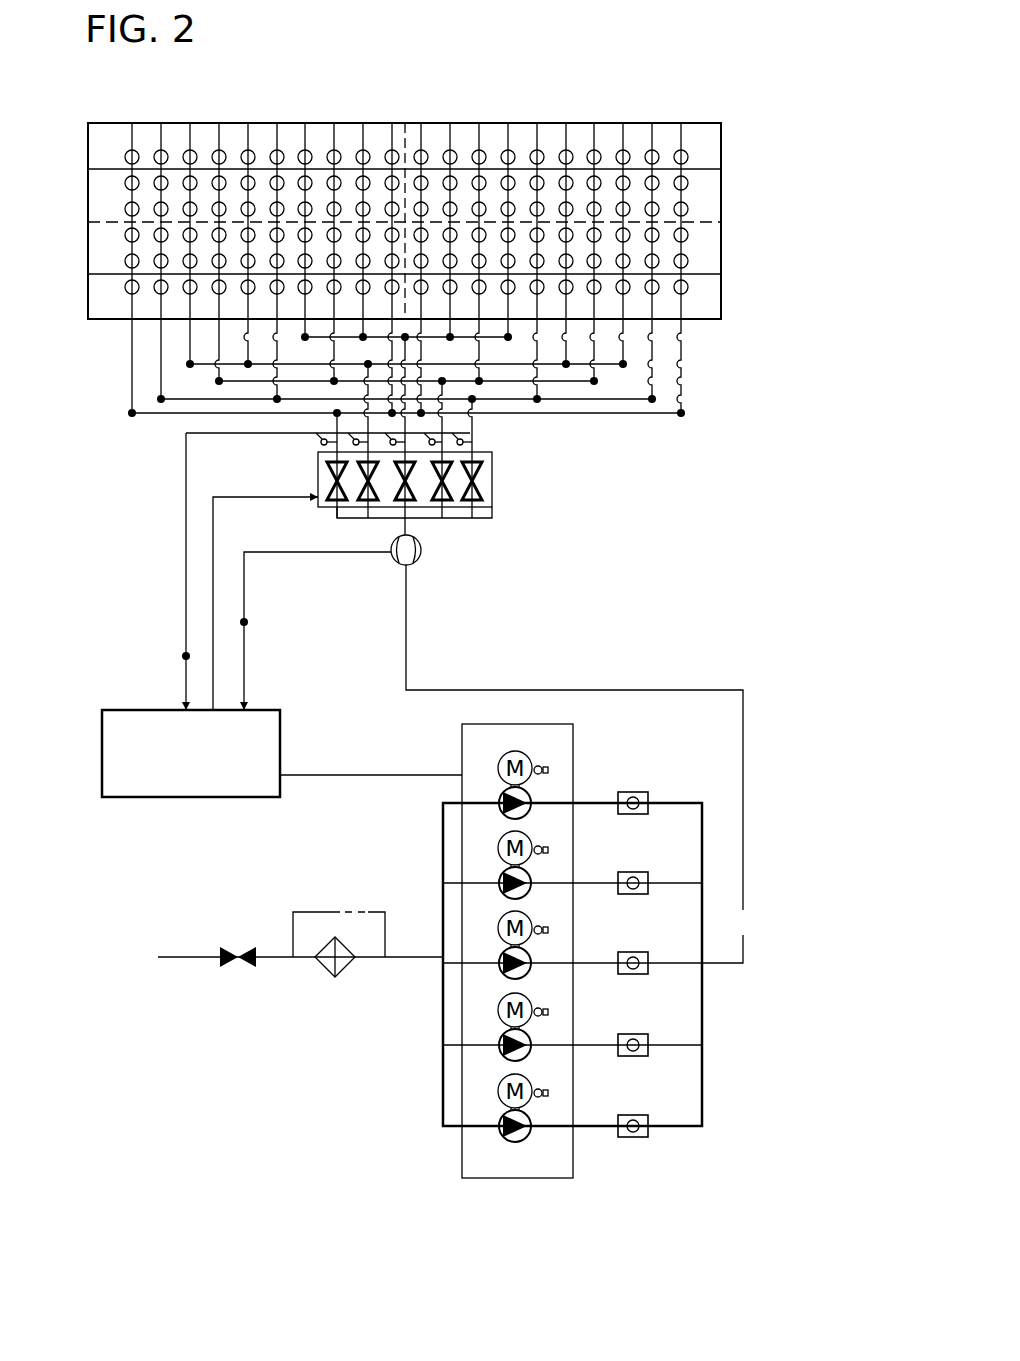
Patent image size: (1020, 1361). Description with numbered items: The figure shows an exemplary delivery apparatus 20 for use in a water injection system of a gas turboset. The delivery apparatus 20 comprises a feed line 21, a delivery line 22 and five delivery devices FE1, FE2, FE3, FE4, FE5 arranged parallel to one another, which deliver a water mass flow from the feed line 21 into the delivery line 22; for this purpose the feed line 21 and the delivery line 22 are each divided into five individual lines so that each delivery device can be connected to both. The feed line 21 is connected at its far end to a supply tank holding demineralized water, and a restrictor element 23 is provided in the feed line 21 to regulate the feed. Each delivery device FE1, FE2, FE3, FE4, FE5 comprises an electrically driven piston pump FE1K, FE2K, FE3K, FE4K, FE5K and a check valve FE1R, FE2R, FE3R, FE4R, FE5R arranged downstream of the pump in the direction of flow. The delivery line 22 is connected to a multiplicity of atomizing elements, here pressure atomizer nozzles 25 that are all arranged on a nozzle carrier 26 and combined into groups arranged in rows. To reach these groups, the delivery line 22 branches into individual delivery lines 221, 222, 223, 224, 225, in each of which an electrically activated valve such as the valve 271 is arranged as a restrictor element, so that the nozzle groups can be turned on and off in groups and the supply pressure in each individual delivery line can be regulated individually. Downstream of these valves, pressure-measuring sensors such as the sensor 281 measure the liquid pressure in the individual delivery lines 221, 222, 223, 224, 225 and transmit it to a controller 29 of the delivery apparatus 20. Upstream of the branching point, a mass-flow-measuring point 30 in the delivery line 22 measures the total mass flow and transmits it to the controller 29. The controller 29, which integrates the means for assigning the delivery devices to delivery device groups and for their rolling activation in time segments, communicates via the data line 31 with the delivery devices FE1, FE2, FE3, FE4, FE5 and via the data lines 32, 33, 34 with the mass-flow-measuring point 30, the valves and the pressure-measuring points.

The delivery apparatus 20 is at (210, 1190).
The feed line 21 is at (387, 962).
The delivery line 22 is at (743, 750).
The individual delivery line 221 is at (478, 507).
The individual delivery line 222 is at (445, 507).
The individual delivery line 223 is at (405, 507).
The individual delivery line 224 is at (362, 507).
The individual delivery line 225 is at (335, 507).
The restrictor element 23 is at (238, 968).
The pressure atomizer nozzles 25 is at (562, 143).
The nozzle carrier 26 is at (380, 123).
The electrically activated valve 271 is at (500, 491).
The pressure-measuring sensor 281 is at (500, 444).
The controller 29 is at (143, 797).
The mass-flow-measuring point 30 is at (406, 565).
The data line 31 is at (337, 775).
The data line 32 is at (244, 650).
The data line 33 is at (213, 507).
The data line 34 is at (186, 610).
The delivery device FE1 is at (502, 1148).
The delivery device FE2 is at (482, 1068).
The delivery device FE3 is at (476, 990).
The delivery device FE4 is at (484, 876).
The delivery device FE5 is at (484, 812).
The electrically driven piston pump FE1K is at (533, 1132).
The electrically driven piston pump FE2K is at (533, 1051).
The electrically driven piston pump FE3K is at (533, 969).
The electrically driven piston pump FE4K is at (533, 889).
The electrically driven piston pump FE5K is at (533, 809).
The check valve FE1R is at (650, 1135).
The check valve FE2R is at (650, 1054).
The check valve FE3R is at (650, 972).
The check valve FE4R is at (650, 892).
The check valve FE5R is at (650, 812).